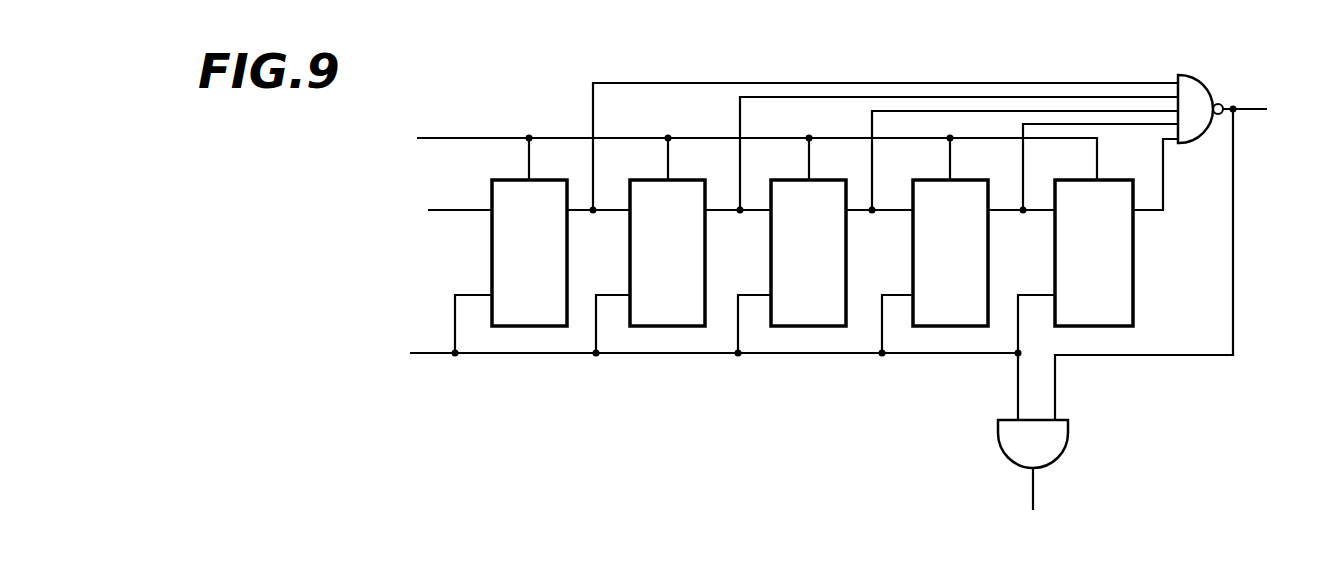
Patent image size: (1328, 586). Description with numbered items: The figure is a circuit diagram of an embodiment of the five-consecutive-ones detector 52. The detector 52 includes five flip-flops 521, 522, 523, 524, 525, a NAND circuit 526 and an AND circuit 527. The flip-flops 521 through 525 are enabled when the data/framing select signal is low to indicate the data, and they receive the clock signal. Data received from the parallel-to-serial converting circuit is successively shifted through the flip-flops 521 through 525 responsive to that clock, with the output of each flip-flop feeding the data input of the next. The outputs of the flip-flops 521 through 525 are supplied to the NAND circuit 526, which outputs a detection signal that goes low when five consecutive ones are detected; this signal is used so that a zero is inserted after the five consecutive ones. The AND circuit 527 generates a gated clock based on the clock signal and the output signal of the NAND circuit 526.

The 5 consecutive "1"s detector 52 is at (467, 88).
The flip-flop 521 is at (518, 326).
The flip-flop 522 is at (660, 326).
The flip-flop 523 is at (800, 326).
The flip-flop 524 is at (942, 326).
The flip-flop 525 is at (1133, 318).
The NAND circuit 526 is at (1227, 73).
The AND circuit 527 is at (1057, 459).